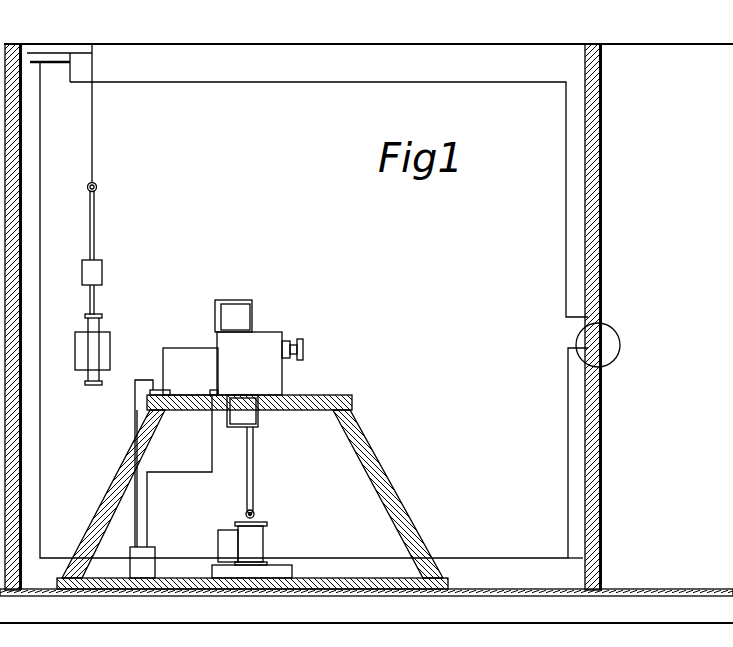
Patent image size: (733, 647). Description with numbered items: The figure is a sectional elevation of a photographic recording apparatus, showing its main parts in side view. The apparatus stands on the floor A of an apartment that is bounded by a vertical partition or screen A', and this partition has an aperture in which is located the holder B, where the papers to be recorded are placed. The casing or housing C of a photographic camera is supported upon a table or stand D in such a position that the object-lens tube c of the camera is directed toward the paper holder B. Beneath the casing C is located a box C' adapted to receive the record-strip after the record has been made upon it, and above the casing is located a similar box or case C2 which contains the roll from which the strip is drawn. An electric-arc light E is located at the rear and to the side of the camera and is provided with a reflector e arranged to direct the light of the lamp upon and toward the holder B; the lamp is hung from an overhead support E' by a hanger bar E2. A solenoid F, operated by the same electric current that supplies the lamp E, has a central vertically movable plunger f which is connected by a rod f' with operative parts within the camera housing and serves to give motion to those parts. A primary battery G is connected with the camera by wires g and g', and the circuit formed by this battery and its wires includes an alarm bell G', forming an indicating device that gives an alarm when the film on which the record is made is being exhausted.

The floor A is at (366, 577).
The vertical partition or screen A' is at (614, 317).
The holder B is at (608, 342).
The casing or housing of a photographic camera C is at (249, 363).
The box C' is at (259, 416).
The box or case C2 is at (243, 300).
The object-lens tube c is at (299, 350).
The table or stand D is at (320, 410).
The electric-arc light E is at (107, 271).
The support rail E' is at (61, 43).
The hanger bar E2 is at (33, 62).
The reflector e is at (105, 345).
The solenoid F is at (263, 540).
The plunger f is at (265, 505).
The rod f' is at (263, 468).
The primary battery G is at (154, 548).
The alarm-bell G' is at (176, 371).
The wire g is at (117, 471).
The wire g' is at (179, 471).